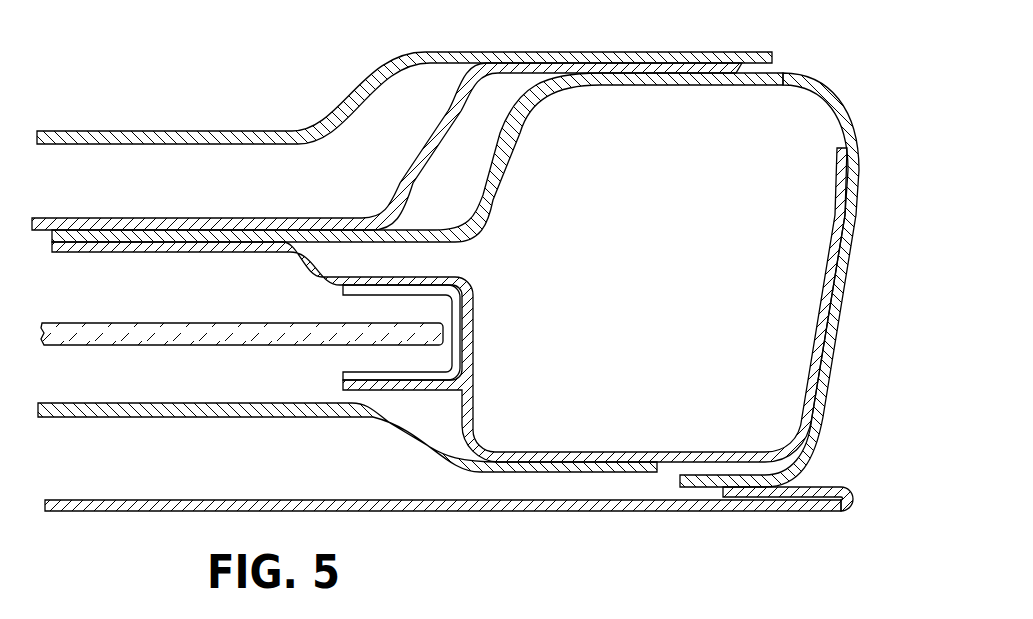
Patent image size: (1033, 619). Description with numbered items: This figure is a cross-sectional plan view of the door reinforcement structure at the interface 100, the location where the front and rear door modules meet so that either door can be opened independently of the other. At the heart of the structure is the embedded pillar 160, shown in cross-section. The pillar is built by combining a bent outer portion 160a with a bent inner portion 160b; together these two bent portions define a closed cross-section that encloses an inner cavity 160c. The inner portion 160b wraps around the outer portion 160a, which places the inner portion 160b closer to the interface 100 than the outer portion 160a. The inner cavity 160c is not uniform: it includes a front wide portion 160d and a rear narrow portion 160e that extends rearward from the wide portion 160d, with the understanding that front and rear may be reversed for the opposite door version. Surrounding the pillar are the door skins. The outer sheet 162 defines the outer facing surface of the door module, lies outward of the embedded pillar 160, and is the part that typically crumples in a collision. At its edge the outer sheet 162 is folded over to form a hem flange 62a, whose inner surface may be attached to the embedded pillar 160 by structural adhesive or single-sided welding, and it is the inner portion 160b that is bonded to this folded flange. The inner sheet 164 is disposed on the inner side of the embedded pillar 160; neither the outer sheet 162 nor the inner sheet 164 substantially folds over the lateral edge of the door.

The inner sheet 164 is at (150, 135).
The embedded pillar 160 is at (490, 275).
The outer portion 160a is at (477, 416).
The inner portion 160b is at (518, 133).
The inner cavity 160c is at (763, 277).
The front wide portion 160d is at (600, 273).
The rear narrow portion 160e is at (410, 266).
The interface 100 is at (842, 345).
The folded flange edge 62a is at (848, 480).
The outer sheet 162 is at (473, 496).